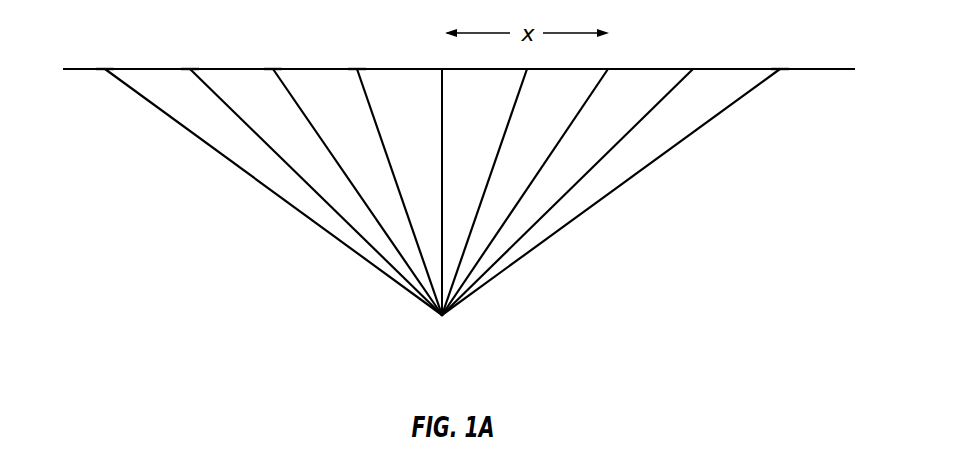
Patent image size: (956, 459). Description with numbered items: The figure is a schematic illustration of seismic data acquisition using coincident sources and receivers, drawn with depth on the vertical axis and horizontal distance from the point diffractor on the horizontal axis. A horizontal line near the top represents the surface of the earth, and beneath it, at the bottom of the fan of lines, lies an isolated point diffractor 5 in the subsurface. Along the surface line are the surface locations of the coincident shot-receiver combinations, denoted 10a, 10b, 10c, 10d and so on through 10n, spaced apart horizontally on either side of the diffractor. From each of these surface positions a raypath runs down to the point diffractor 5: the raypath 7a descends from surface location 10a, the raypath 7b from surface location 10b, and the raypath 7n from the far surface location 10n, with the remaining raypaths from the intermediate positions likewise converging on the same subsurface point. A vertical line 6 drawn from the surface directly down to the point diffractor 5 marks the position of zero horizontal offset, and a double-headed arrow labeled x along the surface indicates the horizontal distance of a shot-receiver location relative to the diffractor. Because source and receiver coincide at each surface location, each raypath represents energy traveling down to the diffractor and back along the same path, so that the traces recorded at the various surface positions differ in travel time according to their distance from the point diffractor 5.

The point diffractor 5 is at (442, 331).
The center line 6 is at (419, 157).
The raypath 7a is at (273, 192).
The raypath 7b is at (316, 192).
The raypath 7n is at (611, 192).
The surface location of coincident shot-receiver combination 10a is at (75, 47).
The surface location of coincident shot-receiver combination 10b is at (160, 47).
The surface location of coincident shot-receiver combination 10c is at (244, 47).
The surface location of coincident shot-receiver combination 10d is at (327, 47).
The surface location of coincident shot-receiver combination 10n is at (812, 47).